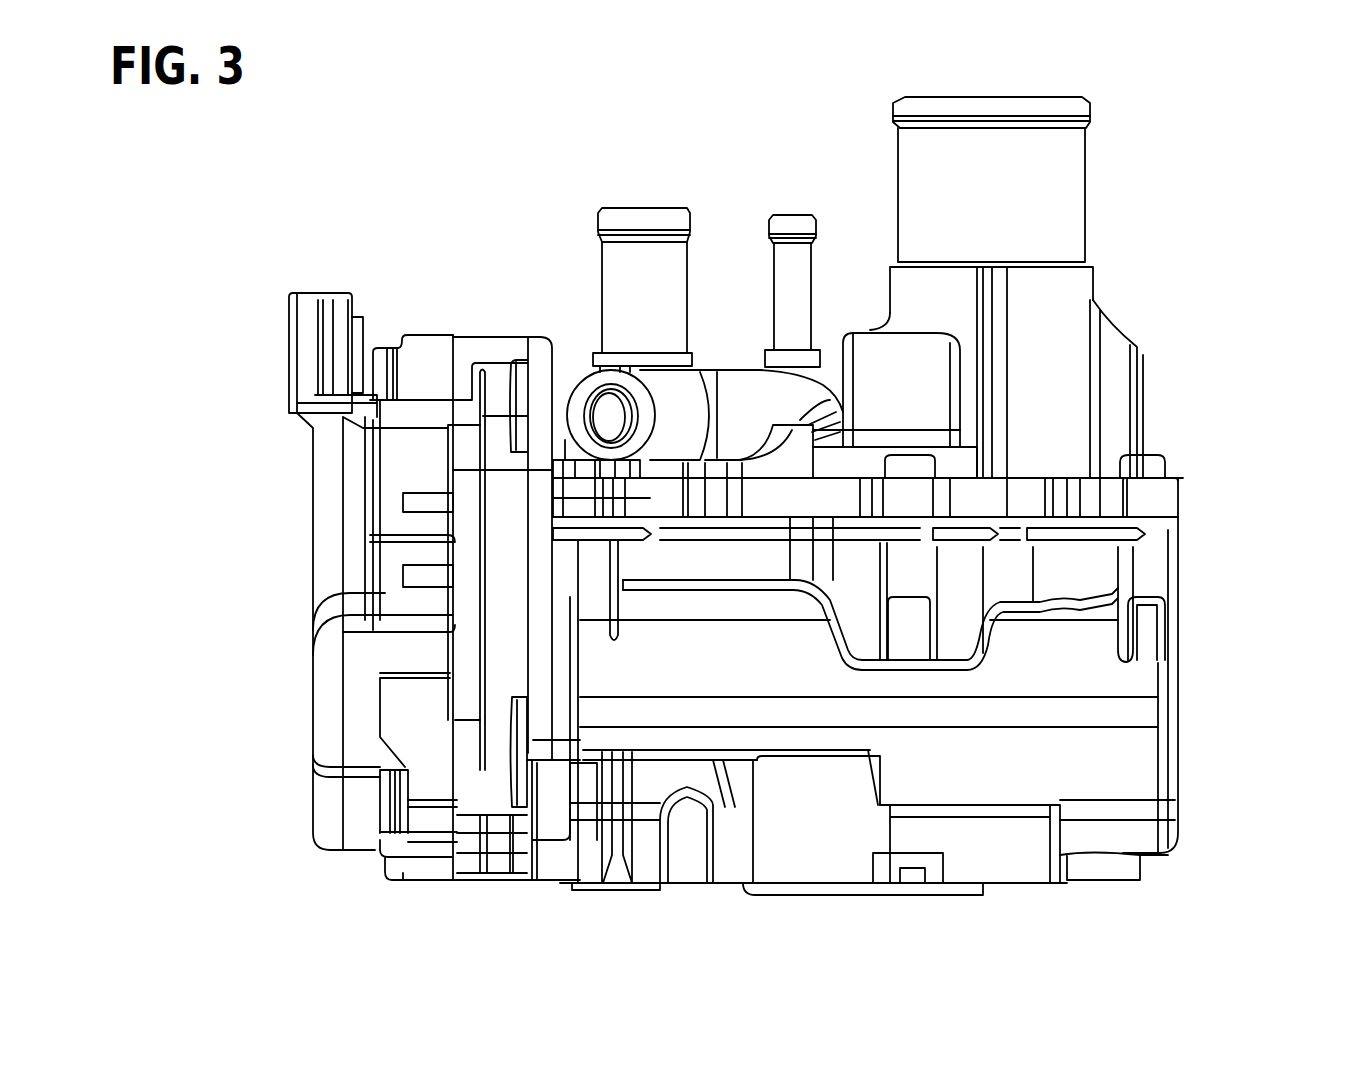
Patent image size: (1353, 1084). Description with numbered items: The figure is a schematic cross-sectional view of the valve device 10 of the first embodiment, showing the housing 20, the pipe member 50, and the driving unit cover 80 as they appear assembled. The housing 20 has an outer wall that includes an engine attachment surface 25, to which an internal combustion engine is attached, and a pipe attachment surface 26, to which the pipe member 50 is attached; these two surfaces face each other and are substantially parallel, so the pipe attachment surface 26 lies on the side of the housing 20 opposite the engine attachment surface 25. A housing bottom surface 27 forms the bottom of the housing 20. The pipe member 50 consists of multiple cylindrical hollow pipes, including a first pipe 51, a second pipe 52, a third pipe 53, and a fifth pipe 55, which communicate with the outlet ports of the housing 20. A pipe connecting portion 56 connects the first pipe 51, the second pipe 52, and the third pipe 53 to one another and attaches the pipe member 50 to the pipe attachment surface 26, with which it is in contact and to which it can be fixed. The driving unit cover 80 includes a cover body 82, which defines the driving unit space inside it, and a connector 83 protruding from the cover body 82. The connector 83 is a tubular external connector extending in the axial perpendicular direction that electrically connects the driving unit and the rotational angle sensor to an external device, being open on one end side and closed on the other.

The valve device 10 is at (322, 203).
The housing 20 is at (1178, 830).
The engine attachment surface 25 is at (1016, 888).
The pipe attachment surface 26 is at (913, 513).
The housing bottom surface 27 is at (1172, 663).
The pipe member 50 is at (1092, 184).
The first pipe 51 is at (1010, 96).
The second pipe 52 is at (730, 364).
The third pipe 53 is at (641, 207).
The fifth pipe 55 is at (790, 214).
The pipe connecting portion 56 is at (843, 497).
The driving unit cover 80 is at (341, 854).
The cover body 82 is at (342, 627).
The connector 83 is at (289, 312).